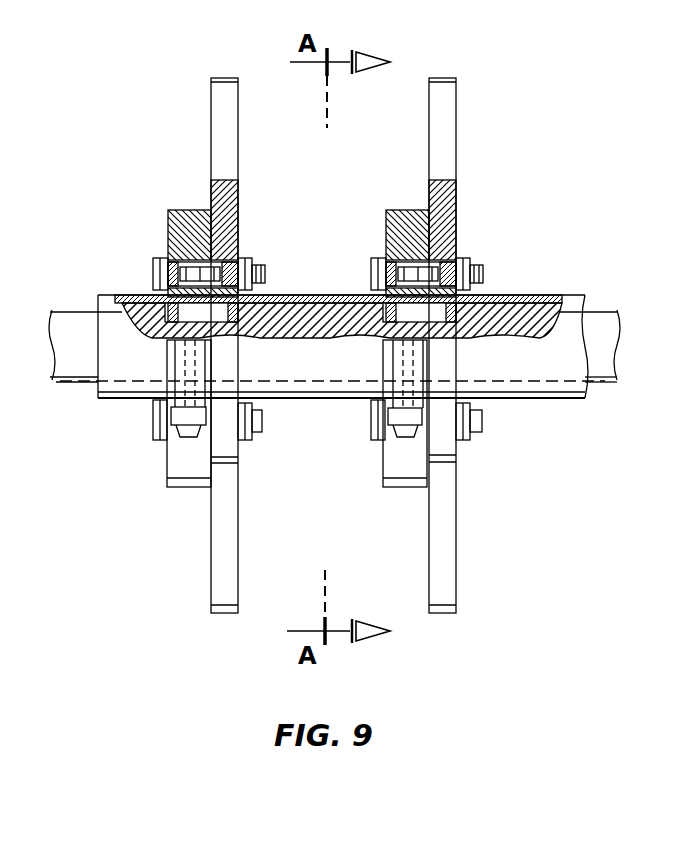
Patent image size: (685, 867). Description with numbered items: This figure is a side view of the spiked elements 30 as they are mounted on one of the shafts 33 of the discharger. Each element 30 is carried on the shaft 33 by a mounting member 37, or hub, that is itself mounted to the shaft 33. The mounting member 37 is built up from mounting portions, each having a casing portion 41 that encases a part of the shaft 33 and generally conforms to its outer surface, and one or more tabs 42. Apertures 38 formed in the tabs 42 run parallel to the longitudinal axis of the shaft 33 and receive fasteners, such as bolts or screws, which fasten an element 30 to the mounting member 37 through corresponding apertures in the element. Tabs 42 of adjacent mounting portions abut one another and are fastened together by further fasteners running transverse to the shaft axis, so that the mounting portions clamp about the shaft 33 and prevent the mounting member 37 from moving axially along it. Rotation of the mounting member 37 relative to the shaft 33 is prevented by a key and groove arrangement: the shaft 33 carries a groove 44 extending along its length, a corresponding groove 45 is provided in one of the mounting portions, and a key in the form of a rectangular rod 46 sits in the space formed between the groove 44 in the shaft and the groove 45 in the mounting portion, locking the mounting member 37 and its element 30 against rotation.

The element 30 is at (469, 126).
The shaft 33 is at (600, 348).
The mounting member 37 is at (536, 276).
The aperture 38 is at (385, 240).
The casing portion 41 is at (550, 368).
The tab 42 is at (361, 345).
The groove 44 is at (485, 397).
The groove 45 is at (522, 293).
The rectangular rod 46 is at (490, 297).